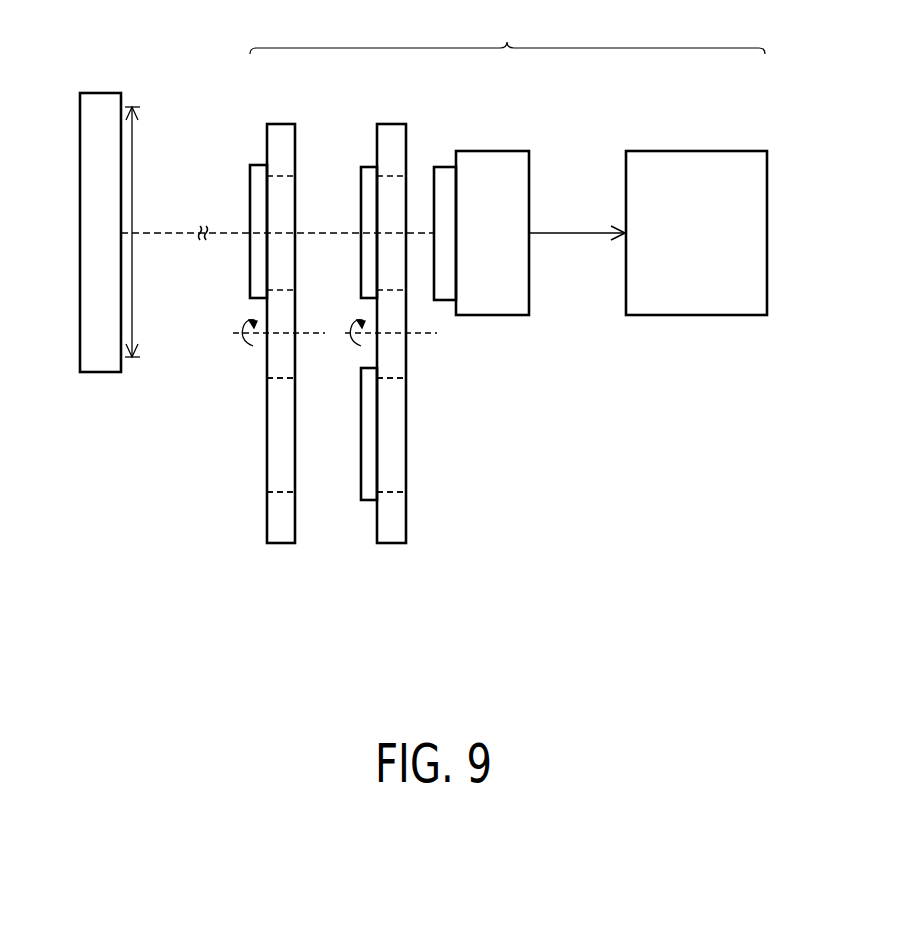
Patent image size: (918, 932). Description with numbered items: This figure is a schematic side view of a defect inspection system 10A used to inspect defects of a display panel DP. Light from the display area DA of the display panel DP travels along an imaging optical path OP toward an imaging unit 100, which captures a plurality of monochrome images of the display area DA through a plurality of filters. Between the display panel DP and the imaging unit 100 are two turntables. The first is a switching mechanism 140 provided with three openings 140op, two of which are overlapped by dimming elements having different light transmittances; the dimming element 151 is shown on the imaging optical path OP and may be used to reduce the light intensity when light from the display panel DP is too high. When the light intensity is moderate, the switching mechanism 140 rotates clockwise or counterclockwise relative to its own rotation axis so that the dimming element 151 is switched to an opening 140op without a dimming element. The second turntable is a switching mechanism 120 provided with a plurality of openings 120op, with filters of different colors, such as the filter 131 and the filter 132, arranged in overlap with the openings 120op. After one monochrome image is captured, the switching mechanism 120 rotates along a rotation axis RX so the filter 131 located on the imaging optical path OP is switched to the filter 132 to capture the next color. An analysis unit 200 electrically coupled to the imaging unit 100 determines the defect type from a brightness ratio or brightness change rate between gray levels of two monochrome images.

The defect inspection system 10A is at (507, 29).
The display panel DP is at (99, 115).
The display area DA is at (150, 232).
The imaging optical path OP is at (176, 237).
The dimming element 151 is at (258, 182).
The filter 131 is at (370, 182).
The filter 132 is at (370, 470).
The imaging unit 100 is at (491, 173).
The analysis unit 200 is at (698, 173).
The rotation axis RX is at (400, 368).
The openings 140op is at (278, 490).
The openings 120op is at (392, 490).
The switching mechanism 140 is at (281, 522).
The switching mechanism 120 is at (391, 522).